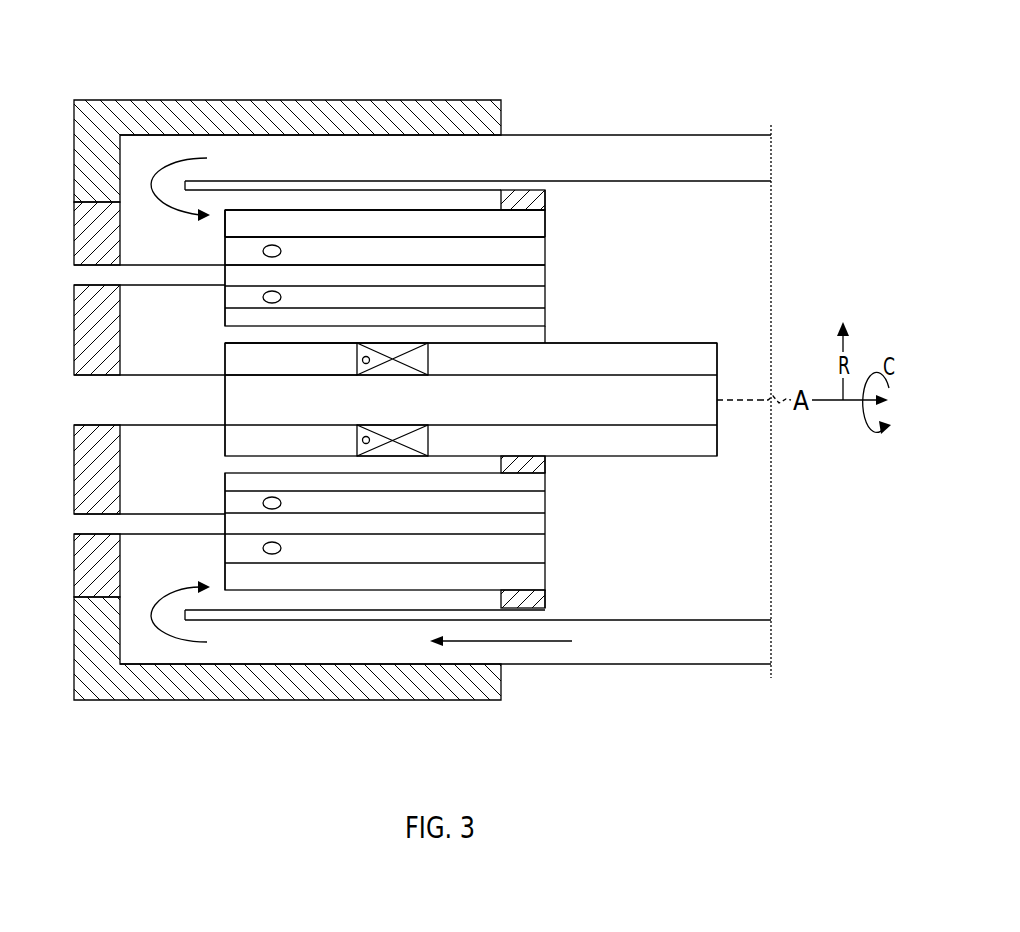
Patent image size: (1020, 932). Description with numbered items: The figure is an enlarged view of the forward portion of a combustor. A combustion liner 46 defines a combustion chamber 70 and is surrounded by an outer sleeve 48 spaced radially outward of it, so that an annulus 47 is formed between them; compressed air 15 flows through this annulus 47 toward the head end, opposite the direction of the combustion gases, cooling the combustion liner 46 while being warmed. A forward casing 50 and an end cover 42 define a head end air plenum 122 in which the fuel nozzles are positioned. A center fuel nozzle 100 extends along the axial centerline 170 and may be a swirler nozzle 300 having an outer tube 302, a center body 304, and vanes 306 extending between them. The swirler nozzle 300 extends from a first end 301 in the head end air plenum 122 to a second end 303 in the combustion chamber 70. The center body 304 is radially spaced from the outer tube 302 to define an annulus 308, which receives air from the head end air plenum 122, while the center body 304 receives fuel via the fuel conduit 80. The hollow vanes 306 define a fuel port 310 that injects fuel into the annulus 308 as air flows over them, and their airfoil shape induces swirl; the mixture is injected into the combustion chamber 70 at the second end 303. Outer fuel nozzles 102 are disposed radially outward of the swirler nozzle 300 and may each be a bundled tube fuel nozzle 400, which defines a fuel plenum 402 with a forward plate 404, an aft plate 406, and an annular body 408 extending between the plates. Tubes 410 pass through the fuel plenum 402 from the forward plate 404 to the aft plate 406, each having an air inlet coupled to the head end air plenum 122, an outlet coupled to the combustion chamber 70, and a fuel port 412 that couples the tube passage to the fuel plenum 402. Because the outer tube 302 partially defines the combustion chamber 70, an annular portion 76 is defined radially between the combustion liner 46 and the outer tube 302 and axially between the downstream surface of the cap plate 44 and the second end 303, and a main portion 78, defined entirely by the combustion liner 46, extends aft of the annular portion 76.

The compressed air 15 is at (153, 175).
The end cover 42 is at (90, 232).
The cap plate 44 is at (545, 202).
The combustion liner 46 is at (241, 180).
The annulus 47 is at (714, 157).
The outer sleeve 48 is at (642, 134).
The forward casing 50 is at (167, 700).
The combustion chamber 70 is at (665, 290).
The annular portion 76 is at (600, 582).
The main portion 78 is at (757, 567).
The fuel conduit 80 is at (187, 287).
The center fuel nozzle 100 is at (592, 457).
The outer fuel nozzles 102 is at (317, 237).
The head end air plenum 122 is at (189, 349).
The axial centerline 170 is at (738, 393).
The swirler nozzle 300 is at (471, 428).
The first end 301 is at (225, 443).
The outer tube 302 is at (580, 343).
The second end 303 is at (730, 464).
The center body 304 is at (568, 427).
The vanes 306 is at (428, 363).
The annulus 308 is at (316, 372).
The fuel port 310 is at (357, 440).
The bundled tube fuel nozzle 400 is at (385, 392).
The fuel plenum 402 is at (357, 203).
The forward plate 404 is at (223, 228).
The aft plate 406 is at (545, 223).
The annular body 408 is at (484, 210).
The tubes 410 is at (416, 237).
The fuel port 412 is at (272, 245).